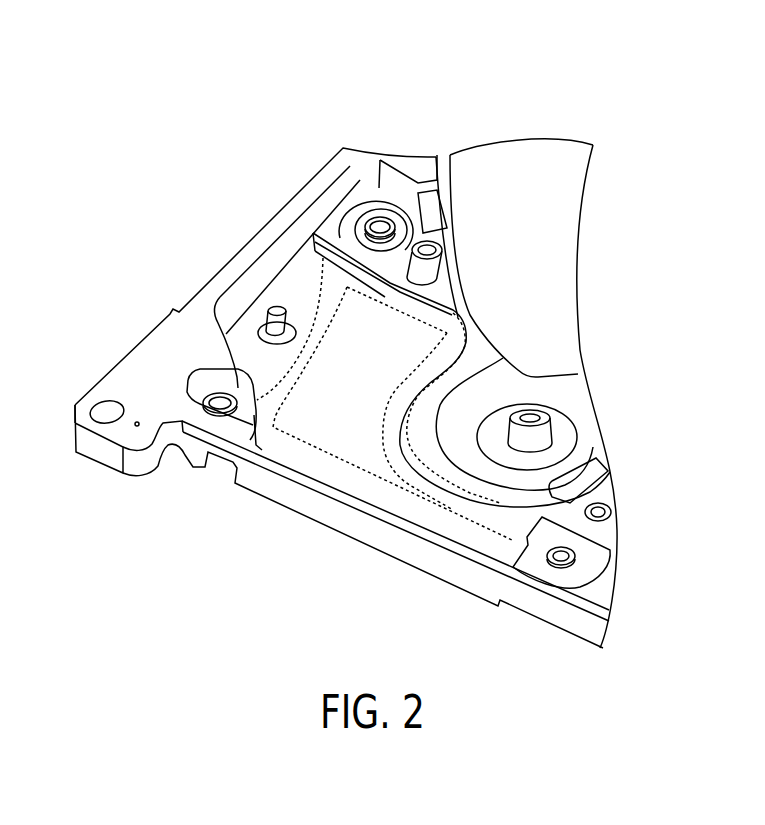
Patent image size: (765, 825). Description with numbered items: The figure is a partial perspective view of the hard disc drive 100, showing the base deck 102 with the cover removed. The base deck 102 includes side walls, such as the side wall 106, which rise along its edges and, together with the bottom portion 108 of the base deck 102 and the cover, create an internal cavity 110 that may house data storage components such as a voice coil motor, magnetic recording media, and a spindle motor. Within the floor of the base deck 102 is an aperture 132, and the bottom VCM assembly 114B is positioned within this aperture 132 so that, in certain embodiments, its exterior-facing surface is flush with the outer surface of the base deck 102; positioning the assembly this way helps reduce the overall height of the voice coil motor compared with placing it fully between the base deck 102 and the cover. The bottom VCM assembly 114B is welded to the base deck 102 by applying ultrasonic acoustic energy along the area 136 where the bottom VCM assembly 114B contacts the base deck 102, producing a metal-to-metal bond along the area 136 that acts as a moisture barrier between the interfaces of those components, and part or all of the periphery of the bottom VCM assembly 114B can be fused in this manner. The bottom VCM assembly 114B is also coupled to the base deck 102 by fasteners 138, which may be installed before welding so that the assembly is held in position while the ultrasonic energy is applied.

The hard disc drive 100 is at (582, 95).
The base deck 102 is at (206, 488).
The side wall 106 is at (242, 259).
The bottom portion 108 is at (571, 308).
The internal cavity 110 is at (587, 281).
The bottom VCM assembly 114B is at (407, 490).
The aperture 132 is at (276, 347).
The area 136 is at (347, 477).
The fasteners 138 is at (378, 217).